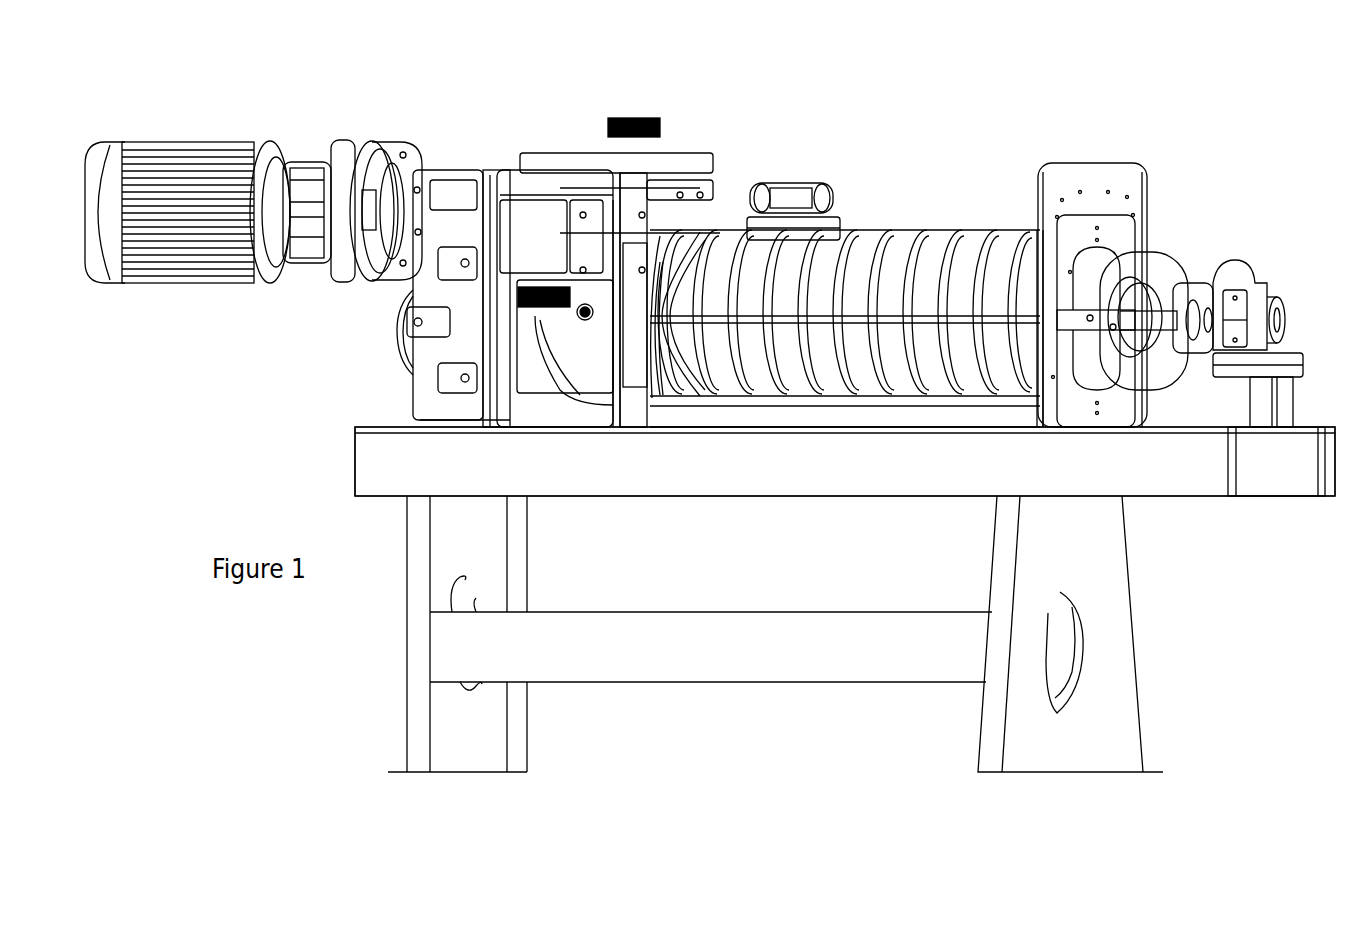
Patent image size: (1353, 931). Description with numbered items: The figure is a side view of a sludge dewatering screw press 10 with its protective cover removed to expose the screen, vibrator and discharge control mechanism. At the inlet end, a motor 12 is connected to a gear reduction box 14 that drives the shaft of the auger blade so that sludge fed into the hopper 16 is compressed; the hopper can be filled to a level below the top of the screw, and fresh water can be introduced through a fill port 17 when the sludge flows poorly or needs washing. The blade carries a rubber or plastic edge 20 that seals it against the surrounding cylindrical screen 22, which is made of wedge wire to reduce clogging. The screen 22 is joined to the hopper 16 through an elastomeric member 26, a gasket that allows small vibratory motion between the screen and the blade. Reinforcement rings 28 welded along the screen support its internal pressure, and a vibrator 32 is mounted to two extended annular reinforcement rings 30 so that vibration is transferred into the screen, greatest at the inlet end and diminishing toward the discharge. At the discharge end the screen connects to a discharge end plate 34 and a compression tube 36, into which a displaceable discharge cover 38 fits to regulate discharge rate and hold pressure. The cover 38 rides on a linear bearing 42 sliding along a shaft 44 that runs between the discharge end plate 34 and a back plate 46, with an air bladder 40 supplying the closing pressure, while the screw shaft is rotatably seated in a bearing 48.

The screw press 10 is at (212, 416).
The motor 12 is at (266, 164).
The gear reduction box 14 is at (444, 226).
The hopper 16 is at (508, 313).
The fill port 17 is at (584, 316).
The edge 20 is at (657, 260).
The screen 22 is at (858, 262).
The elastomeric member 26 is at (664, 375).
The reinforcement rings 28 is at (697, 236).
The extended annular reinforcement rings 30 is at (833, 236).
The vibrator 32 is at (787, 192).
The discharge end plate 34 is at (1068, 172).
The compression tube 36 is at (1115, 258).
The displaceable discharge cover 38 is at (1148, 290).
The air bladder 40 is at (1150, 300).
The linear bearing 42 is at (1113, 327).
The shaft 44 is at (1090, 318).
The back plate 46 is at (1232, 272).
The bearing 48 is at (1280, 298).